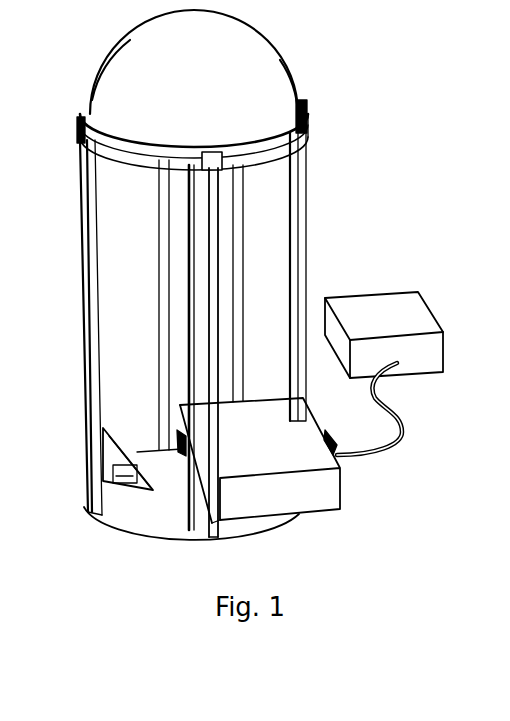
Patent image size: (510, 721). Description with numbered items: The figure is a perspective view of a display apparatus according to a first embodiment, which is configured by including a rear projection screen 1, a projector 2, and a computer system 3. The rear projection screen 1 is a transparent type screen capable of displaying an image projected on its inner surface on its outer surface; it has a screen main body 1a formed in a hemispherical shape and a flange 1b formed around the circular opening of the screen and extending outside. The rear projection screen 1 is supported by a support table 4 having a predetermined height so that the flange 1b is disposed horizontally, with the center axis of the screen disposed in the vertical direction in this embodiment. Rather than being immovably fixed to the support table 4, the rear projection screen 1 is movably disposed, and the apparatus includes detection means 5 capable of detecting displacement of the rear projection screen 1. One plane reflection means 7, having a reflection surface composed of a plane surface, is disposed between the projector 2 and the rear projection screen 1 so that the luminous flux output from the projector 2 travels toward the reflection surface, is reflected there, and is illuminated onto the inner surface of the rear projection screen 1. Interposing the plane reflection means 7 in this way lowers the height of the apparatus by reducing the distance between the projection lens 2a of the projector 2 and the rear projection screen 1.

The rear projection screen 1 is at (273, 50).
The screen main body 1a is at (112, 70).
The flange 1b is at (296, 100).
The projector 2 is at (335, 490).
The projection lens 2a is at (180, 462).
The computer system 3 is at (380, 300).
The support table 4 is at (312, 198).
The detection means 5 is at (77, 125).
The plane reflection means 7 is at (118, 447).